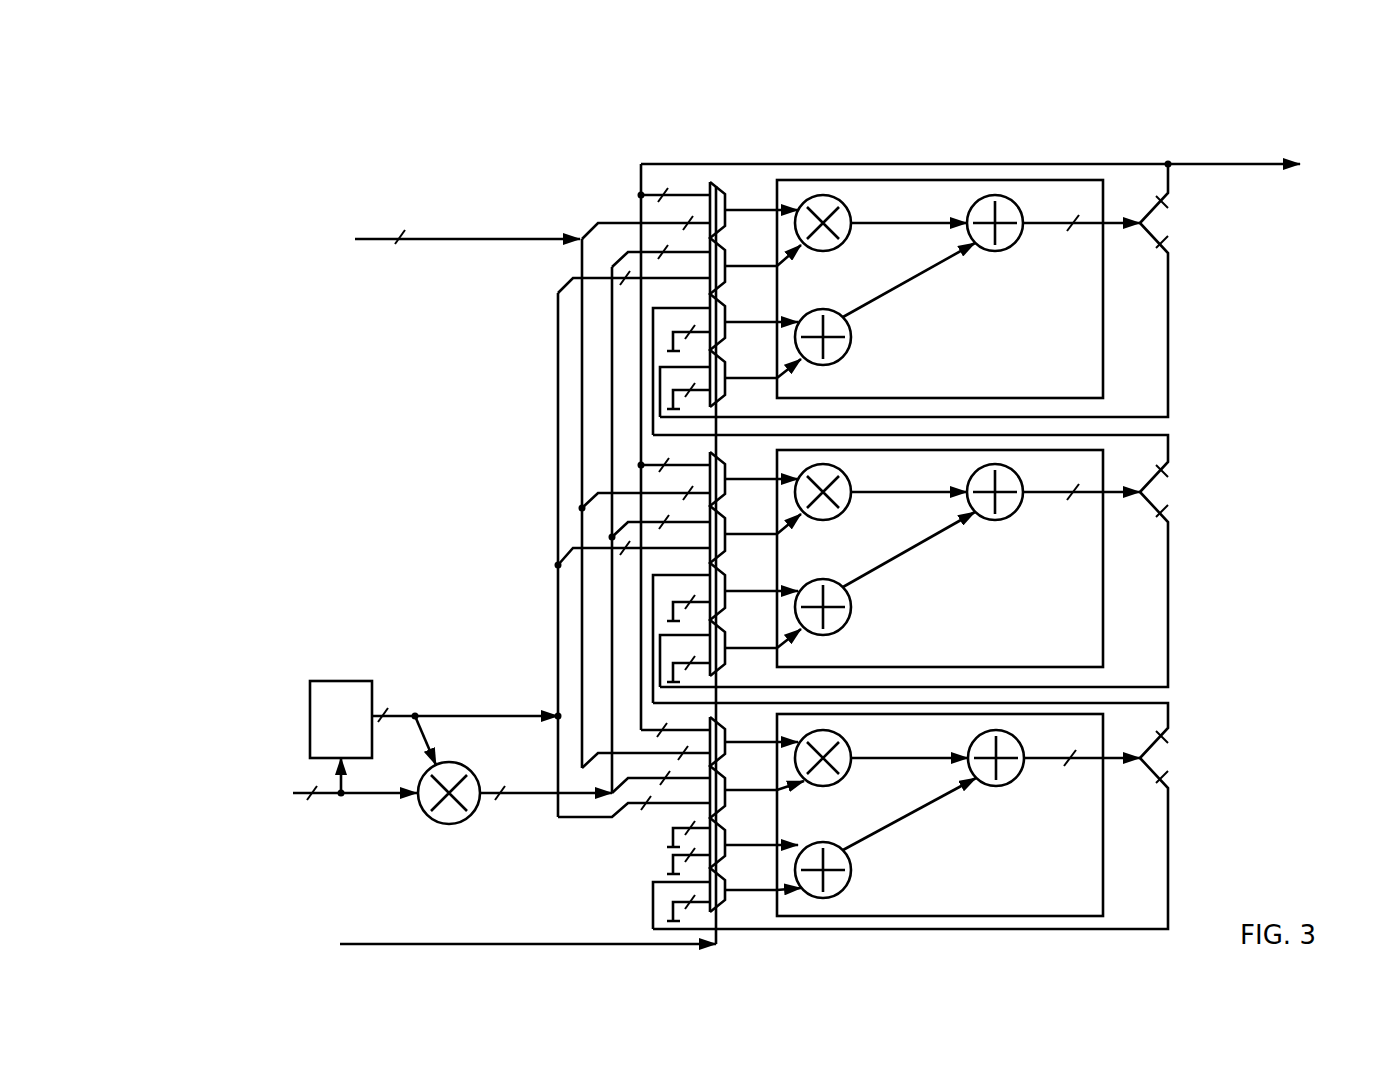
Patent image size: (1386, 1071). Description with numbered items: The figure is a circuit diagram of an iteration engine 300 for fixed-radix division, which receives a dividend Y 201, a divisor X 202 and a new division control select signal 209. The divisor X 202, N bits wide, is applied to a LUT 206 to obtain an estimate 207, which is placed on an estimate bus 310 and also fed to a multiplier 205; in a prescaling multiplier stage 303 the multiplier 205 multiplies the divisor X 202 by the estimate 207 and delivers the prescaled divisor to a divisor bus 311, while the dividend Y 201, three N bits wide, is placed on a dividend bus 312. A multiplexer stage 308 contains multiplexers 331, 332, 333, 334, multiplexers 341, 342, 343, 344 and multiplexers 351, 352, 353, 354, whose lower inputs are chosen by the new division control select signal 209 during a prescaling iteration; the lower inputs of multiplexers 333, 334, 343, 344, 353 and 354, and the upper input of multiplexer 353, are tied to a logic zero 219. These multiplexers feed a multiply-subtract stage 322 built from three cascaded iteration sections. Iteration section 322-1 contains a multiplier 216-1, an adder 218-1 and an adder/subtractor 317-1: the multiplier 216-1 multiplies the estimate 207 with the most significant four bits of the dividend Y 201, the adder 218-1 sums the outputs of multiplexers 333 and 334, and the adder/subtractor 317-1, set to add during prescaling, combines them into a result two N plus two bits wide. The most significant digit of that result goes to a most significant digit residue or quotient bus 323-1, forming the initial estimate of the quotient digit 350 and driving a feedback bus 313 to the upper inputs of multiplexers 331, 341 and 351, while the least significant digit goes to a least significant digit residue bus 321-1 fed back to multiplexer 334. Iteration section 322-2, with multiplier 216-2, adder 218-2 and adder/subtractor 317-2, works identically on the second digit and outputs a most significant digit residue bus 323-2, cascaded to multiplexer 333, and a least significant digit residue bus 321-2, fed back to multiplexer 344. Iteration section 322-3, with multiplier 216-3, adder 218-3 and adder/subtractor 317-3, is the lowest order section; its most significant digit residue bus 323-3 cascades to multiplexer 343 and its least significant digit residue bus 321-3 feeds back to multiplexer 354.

The iteration engine 300 is at (741, 522).
The dividend Y 201 is at (355, 239).
The dividend bus 312 is at (584, 228).
The feedback bus 313 is at (638, 164).
The quotient digit 350 is at (1291, 160).
The estimate bus 310 is at (558, 405).
The divisor bus 311 is at (612, 463).
The multiplexer stage 308 is at (755, 150).
The multiplexer 331 is at (728, 202).
The multiplexer 332 is at (728, 258).
The multiplexer 333 is at (728, 314).
The multiplexer 334 is at (728, 370).
The multiplexer 341 is at (728, 471).
The multiplexer 342 is at (728, 526).
The multiplexer 343 is at (728, 583).
The multiplexer 344 is at (728, 640).
The multiplexer 351 is at (728, 734).
The multiplexer 352 is at (728, 782).
The multiplexer 353 is at (728, 837).
The multiplexer 354 is at (728, 882).
The multiply-subtract stage 322 is at (1137, 150).
The iteration section 322-1 is at (940, 289).
The iteration section 322-2 is at (940, 558).
The iteration section 322-3 is at (940, 815).
The multiplier 216-1 is at (851, 233).
The multiplier 216-2 is at (851, 502).
The multiplier 216-3 is at (851, 768).
The adder 218-1 is at (850, 343).
The adder 218-2 is at (850, 613).
The adder 218-3 is at (850, 876).
The adder/subtractor 317-1 is at (1001, 251).
The adder/subtractor 317-2 is at (1001, 520).
The adder/subtractor 317-3 is at (1002, 786).
The most significant digit residue or quotient bus 323-1 is at (1168, 192).
The most significant digit residue bus 323-2 is at (1168, 450).
The most significant digit residue bus 323-3 is at (1168, 712).
The least significant digit residue bus 321-1 is at (1168, 340).
The least significant digit residue bus 321-2 is at (1168, 622).
The least significant digit residue bus 321-3 is at (1168, 840).
The prescaling multiplier stage 303 is at (375, 625).
The LUT 206 is at (310, 702).
The estimate 207 is at (443, 713).
The multiplier 205 is at (463, 825).
The divisor X 202 is at (293, 793).
The new division control select signal 209 is at (340, 944).
The logic 0 219 is at (668, 849).